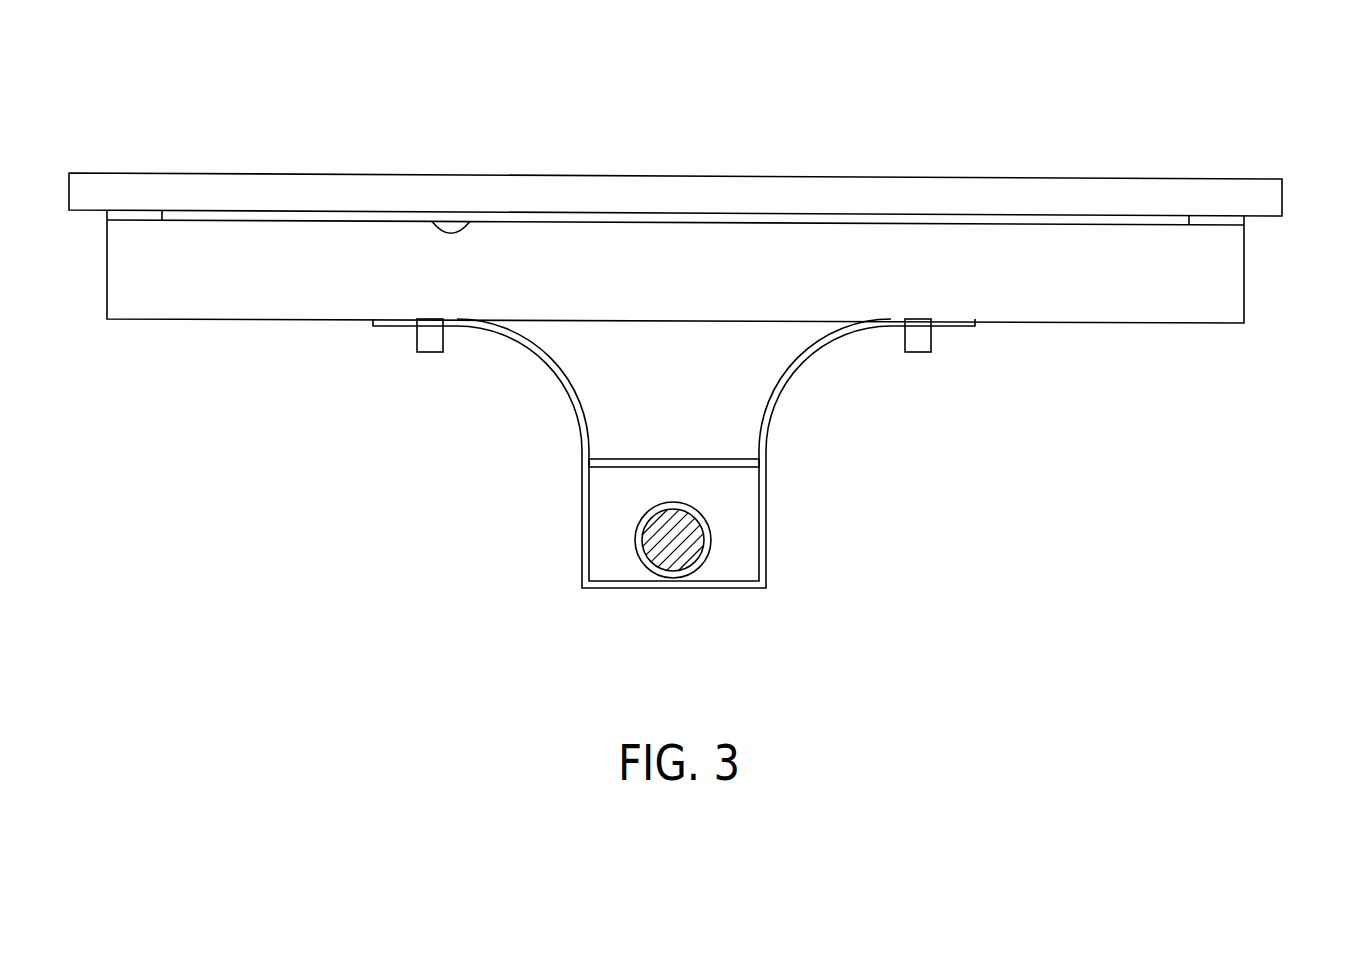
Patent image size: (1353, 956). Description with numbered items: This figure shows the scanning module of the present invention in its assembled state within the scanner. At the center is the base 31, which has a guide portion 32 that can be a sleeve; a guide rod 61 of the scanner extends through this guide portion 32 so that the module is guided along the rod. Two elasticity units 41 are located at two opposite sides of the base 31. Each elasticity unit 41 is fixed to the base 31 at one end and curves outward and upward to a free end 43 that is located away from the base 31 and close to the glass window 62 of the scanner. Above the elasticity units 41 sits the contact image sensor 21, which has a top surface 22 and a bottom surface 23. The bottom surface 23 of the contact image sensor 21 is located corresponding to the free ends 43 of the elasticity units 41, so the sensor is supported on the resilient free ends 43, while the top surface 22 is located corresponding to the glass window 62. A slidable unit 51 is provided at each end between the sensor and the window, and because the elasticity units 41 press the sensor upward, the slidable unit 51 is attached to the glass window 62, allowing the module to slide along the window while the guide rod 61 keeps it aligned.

The contact image sensor 21 is at (1222, 272).
The top surface 22 is at (465, 228).
The bottom surface 23 is at (667, 320).
The base 31 is at (670, 461).
The guide portion 32 is at (637, 543).
The elasticity unit 41 is at (513, 342).
The free end 43 is at (453, 328).
The slidable unit 51 is at (130, 217).
The guide rod 61 is at (676, 541).
The glass window 62 is at (896, 195).